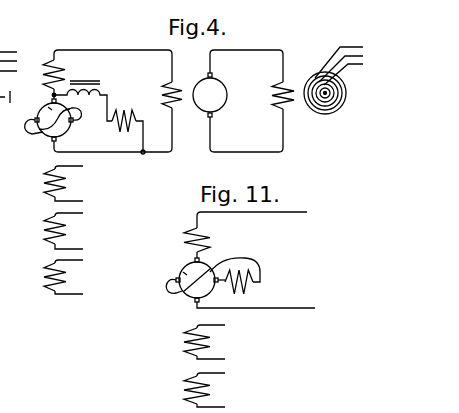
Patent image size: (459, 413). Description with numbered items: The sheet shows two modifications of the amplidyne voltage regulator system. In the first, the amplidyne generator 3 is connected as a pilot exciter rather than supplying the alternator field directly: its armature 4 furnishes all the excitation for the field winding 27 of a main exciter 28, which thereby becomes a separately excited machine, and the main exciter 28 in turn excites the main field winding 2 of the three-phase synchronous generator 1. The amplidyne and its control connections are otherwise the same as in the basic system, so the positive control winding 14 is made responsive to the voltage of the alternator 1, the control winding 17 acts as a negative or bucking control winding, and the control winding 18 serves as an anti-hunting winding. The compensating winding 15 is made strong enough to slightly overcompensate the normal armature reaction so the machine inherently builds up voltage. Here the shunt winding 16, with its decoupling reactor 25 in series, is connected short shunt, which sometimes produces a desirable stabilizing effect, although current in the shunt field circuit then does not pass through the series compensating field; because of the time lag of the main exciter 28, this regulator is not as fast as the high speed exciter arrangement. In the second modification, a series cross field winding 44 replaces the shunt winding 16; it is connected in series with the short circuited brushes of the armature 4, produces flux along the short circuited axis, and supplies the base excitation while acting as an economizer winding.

In FIG. 4, the synchronous generator 1 is at (348, 92).
In FIG. 4, the main field winding 2 is at (287, 82).
In FIG. 4, the amplidyne generator 3 is at (39, 149).
In FIG. 11, the amplidyne generator 3 is at (180, 314).
In FIG. 4, the armature 4 is at (48, 107).
In FIG. 11, the armature 4 is at (183, 272).
In FIG. 4, the positive control winding 14 is at (70, 230).
In FIG. 11, the positive control winding 14 is at (211, 340).
In FIG. 4, the compensating winding 15 is at (56, 75).
In FIG. 11, the compensating winding 15 is at (203, 240).
In FIG. 4, the shunt winding 16 is at (112, 128).
In FIG. 4, the control winding 17 is at (70, 277).
In FIG. 11, the control winding 17 is at (211, 388).
In FIG. 4, the control winding 18 is at (70, 183).
In FIG. 4, the reactor 25 is at (99, 90).
In FIG. 4, the field winding 27 is at (168, 85).
In FIG. 4, the main exciter 28 is at (221, 82).
In FIG. 11, the series cross field winding 44 is at (253, 285).